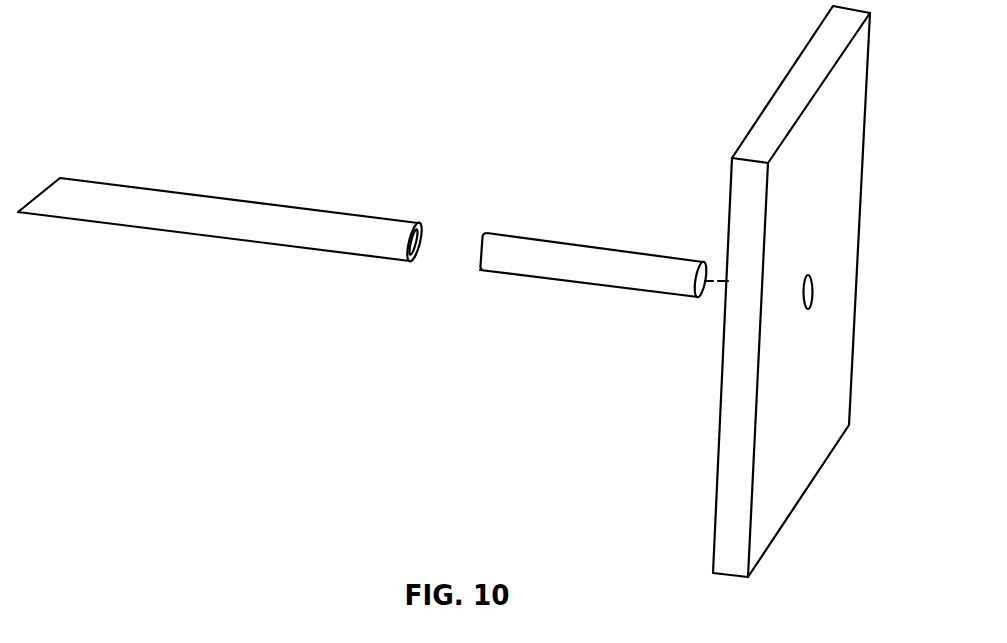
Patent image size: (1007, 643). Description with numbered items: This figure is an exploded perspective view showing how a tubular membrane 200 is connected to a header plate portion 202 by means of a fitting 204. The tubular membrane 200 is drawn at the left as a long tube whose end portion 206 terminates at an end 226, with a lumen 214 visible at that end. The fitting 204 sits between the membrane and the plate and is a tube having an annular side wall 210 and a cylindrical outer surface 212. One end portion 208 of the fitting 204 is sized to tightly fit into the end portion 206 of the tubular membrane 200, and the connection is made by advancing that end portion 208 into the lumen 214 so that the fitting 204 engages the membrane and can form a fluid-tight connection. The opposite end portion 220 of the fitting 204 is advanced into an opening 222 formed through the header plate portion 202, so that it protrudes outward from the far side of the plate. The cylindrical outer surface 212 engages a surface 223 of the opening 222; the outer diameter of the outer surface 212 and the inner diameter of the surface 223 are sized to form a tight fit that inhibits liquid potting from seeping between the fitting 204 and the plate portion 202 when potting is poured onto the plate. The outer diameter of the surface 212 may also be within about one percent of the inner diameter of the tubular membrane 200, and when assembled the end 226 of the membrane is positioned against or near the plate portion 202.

The tubular membrane 200 is at (249, 239).
The header plate portion 202 is at (784, 291).
The fitting 204 is at (604, 272).
The end portion of the tubular membrane 206 is at (366, 227).
The end portion of the fitting 208 is at (510, 252).
The annular side wall 210 is at (610, 250).
The cylindrical outer surface 212 is at (640, 300).
The lumen 214 is at (419, 239).
The opposite end portion of the fitting 220 is at (680, 272).
The opening 222 is at (813, 296).
The surface of the opening 223 is at (812, 290).
The end of the tubular membrane 226 is at (419, 247).